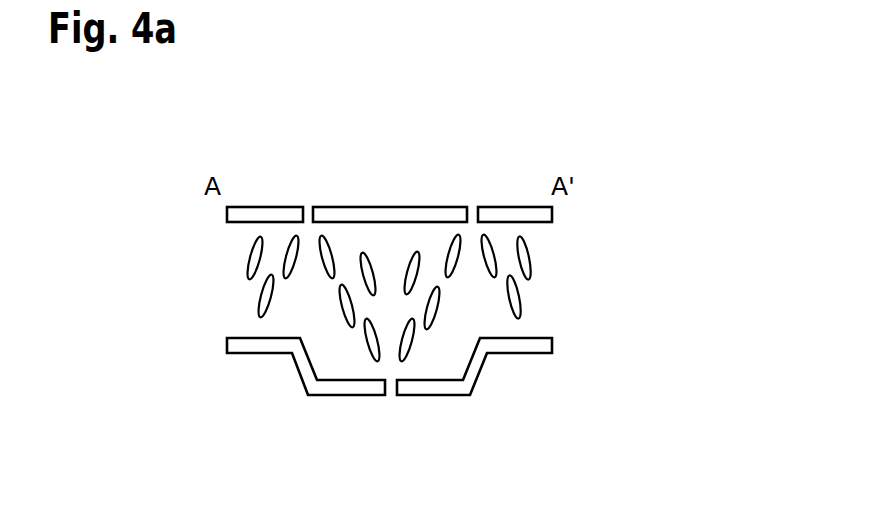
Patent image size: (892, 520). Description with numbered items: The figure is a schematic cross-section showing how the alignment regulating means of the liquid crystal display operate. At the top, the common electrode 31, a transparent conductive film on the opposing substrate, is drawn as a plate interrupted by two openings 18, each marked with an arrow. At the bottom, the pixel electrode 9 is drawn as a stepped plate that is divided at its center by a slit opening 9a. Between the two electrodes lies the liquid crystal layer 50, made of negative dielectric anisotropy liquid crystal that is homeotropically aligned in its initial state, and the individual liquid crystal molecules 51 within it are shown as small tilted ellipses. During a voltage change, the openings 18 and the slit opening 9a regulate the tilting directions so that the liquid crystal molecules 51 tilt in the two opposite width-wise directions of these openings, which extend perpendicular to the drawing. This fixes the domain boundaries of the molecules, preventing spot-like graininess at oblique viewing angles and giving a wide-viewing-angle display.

The openings 18 is at (311, 195).
The common electrode 31 is at (545, 215).
The liquid crystal layer 50 is at (218, 225).
The liquid crystal molecules 51 is at (528, 256).
The pixel electrode 9 is at (522, 348).
The slit opening 9a is at (391, 397).